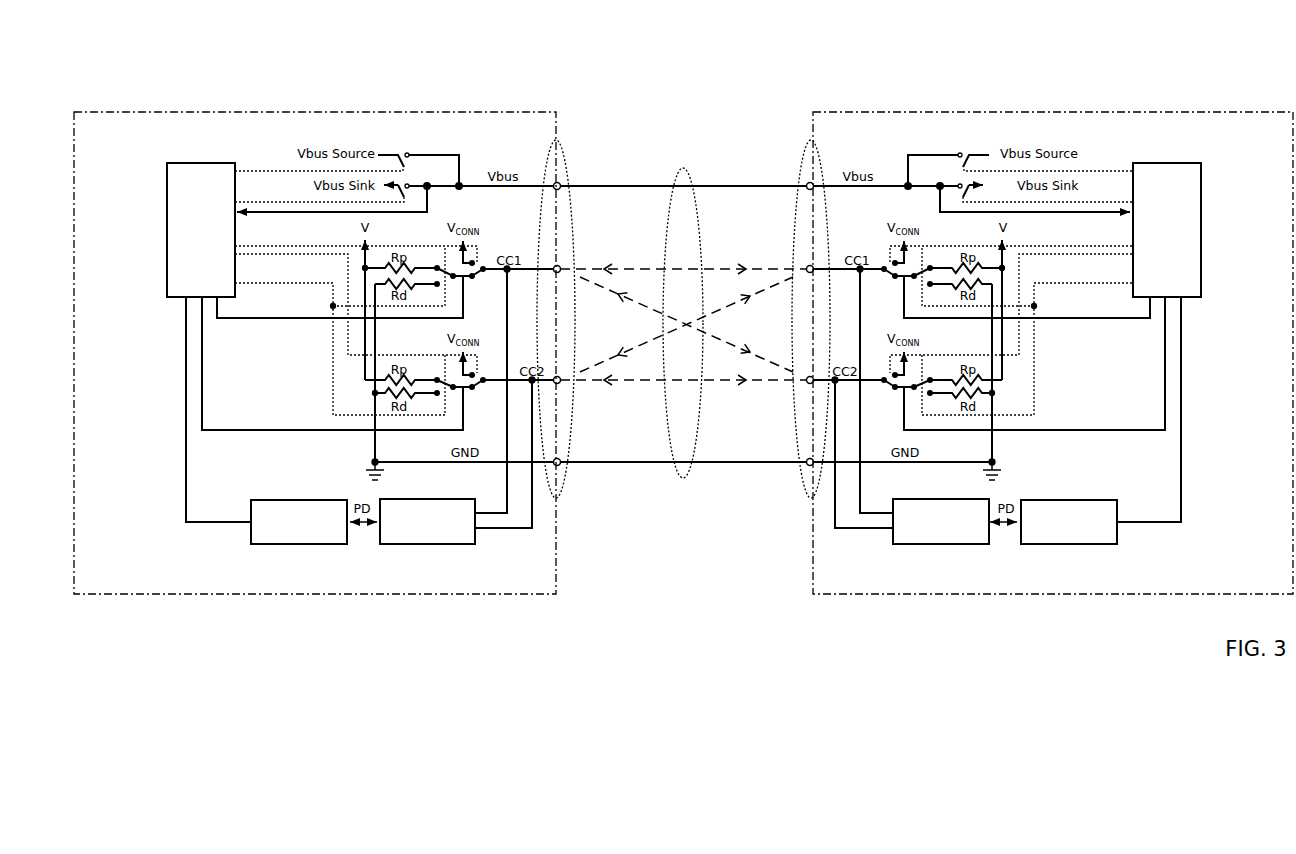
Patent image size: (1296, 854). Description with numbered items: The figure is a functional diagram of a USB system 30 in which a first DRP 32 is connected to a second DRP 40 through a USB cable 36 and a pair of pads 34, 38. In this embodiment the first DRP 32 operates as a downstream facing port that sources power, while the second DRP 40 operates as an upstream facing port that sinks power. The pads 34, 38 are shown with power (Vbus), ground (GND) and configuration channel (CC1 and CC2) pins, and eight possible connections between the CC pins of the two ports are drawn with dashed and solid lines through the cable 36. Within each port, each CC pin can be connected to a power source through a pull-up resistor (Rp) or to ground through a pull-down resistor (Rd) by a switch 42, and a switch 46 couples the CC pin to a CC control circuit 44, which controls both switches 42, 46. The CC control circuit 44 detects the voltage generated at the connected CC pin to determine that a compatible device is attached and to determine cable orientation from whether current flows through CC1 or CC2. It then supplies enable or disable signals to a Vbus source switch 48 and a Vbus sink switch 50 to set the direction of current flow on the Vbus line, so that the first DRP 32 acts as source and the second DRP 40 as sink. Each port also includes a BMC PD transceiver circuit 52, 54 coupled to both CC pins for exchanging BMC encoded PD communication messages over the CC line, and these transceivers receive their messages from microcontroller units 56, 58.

The system 30 is at (978, 40).
The first DRP 32 is at (140, 108).
The pad 34 is at (556, 143).
The USB cable 36 is at (683, 168).
The pad 38 is at (810, 140).
The second DRP 40 is at (1228, 104).
The switch 42 is at (449, 265).
The CC control circuit 44 is at (684, 230).
The switch 46 is at (486, 262).
The switch 48 is at (402, 150).
The switch 50 is at (412, 193).
The BMC PD transceiver circuit 52 is at (428, 546).
The BMC PD transceiver circuit 54 is at (950, 546).
The microcontroller unit 56 is at (314, 547).
The microcontroller unit 58 is at (1062, 547).